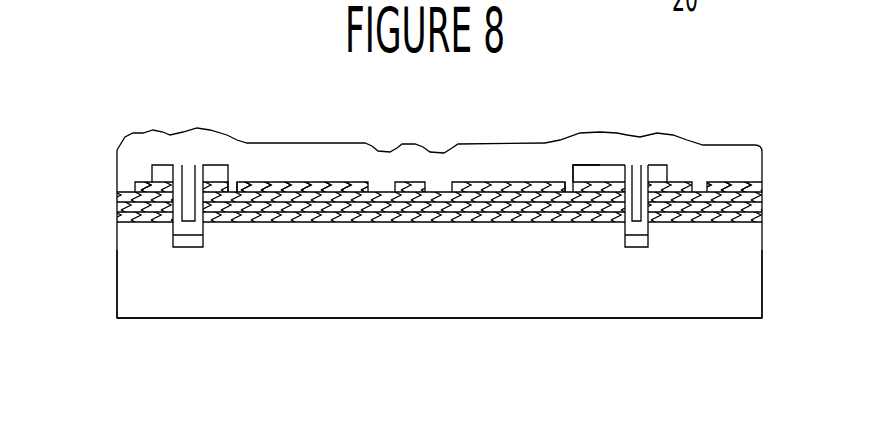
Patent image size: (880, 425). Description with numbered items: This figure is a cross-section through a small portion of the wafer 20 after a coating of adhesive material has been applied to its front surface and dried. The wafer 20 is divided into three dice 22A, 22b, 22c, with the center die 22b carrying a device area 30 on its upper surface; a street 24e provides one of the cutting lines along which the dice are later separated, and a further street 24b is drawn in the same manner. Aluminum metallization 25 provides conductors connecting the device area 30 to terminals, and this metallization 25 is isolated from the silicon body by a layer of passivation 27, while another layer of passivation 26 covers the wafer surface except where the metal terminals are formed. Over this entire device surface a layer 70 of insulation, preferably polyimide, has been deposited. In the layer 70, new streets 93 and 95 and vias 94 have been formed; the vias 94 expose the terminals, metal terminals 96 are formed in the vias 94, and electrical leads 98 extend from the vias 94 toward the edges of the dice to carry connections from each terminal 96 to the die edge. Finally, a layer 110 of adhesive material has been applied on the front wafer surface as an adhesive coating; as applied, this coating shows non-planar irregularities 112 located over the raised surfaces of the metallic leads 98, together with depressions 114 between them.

The wafer 20 is at (622, 347).
The die 22A is at (138, 272).
The center die 22b is at (448, 275).
The die 22c is at (697, 288).
The street 24e is at (183, 222).
The contact plug 24b is at (627, 228).
The aluminum metallization 25 is at (125, 203).
The passivation layer 26 is at (128, 188).
The passivation layer 27 is at (122, 223).
The device area 30 is at (203, 163).
The insulation layer 70 is at (272, 186).
The new street 93 is at (700, 190).
The via 94 is at (573, 183).
The new street 95 is at (135, 182).
The metal terminal 96 is at (229, 194).
The electrical lead 98 is at (600, 167).
The adhesive material layer 110 is at (731, 162).
The non-planar irregularities 112 is at (163, 135).
The depressions 114 is at (422, 111).